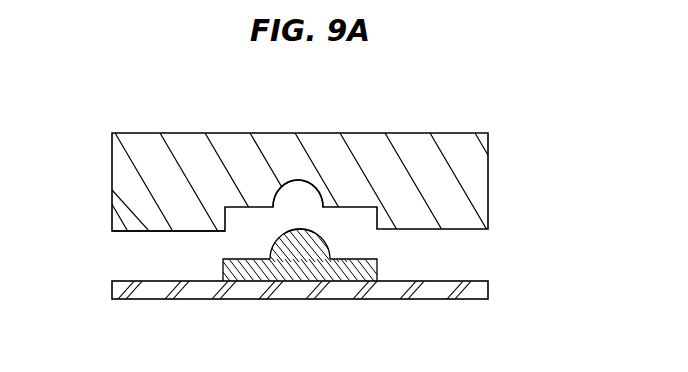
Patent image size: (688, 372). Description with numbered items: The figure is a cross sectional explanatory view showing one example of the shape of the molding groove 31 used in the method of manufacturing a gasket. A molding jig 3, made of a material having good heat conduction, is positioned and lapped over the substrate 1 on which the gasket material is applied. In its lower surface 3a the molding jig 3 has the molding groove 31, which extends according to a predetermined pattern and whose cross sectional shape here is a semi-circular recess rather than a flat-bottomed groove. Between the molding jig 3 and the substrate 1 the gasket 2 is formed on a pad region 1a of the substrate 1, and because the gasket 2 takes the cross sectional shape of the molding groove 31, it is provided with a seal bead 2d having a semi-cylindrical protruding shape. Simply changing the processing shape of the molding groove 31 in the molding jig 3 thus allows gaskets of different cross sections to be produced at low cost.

The substrate 1 is at (385, 299).
The electrode pad 1a is at (403, 282).
The gasket 2 is at (327, 233).
The seal bead 2d is at (291, 232).
The molding jig 3 is at (488, 163).
The lower surface 3a is at (150, 233).
The molding groove 31 is at (304, 188).